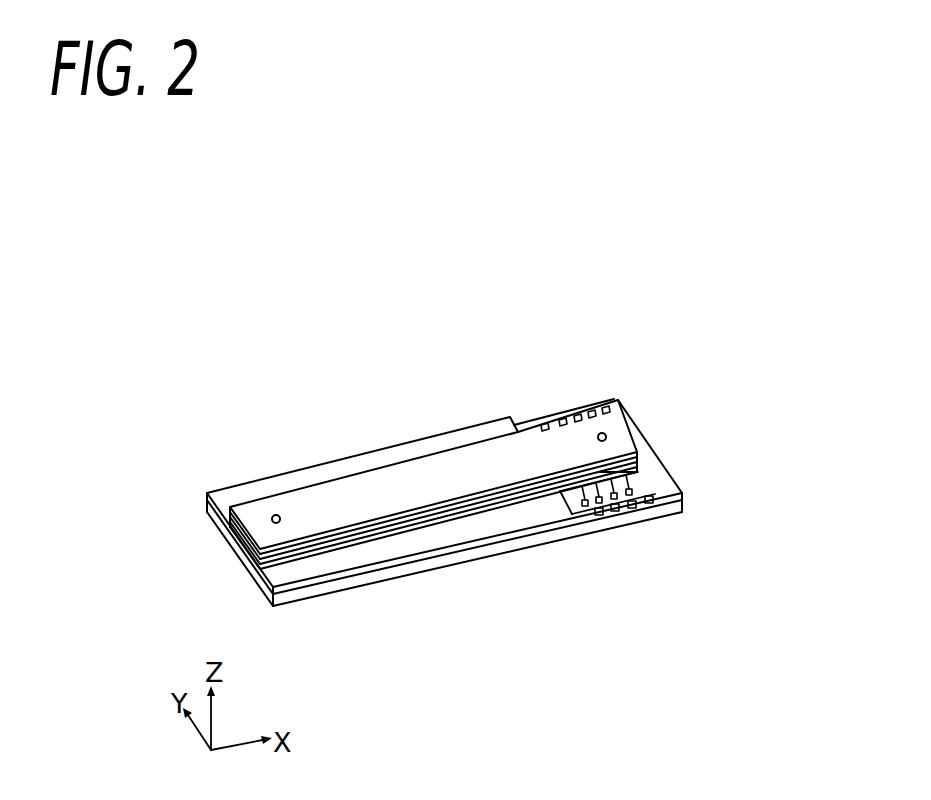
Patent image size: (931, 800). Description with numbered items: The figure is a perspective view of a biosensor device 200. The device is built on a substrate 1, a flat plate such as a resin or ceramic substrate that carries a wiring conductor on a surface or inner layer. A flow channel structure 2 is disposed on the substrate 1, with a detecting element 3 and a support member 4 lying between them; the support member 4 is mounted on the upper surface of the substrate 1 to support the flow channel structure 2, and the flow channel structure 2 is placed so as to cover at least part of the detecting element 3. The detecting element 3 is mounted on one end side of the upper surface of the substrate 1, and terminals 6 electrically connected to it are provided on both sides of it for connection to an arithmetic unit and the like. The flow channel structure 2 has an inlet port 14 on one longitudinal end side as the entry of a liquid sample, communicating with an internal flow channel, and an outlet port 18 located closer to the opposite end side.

The biosensor device 200 is at (554, 264).
The substrate 1 is at (638, 445).
The flow channel structure 2 is at (413, 483).
The detecting element 3 is at (638, 478).
The support member 4 is at (384, 542).
The terminals 6 is at (545, 420).
The inlet port 14 is at (276, 514).
The outlet port 18 is at (602, 432).